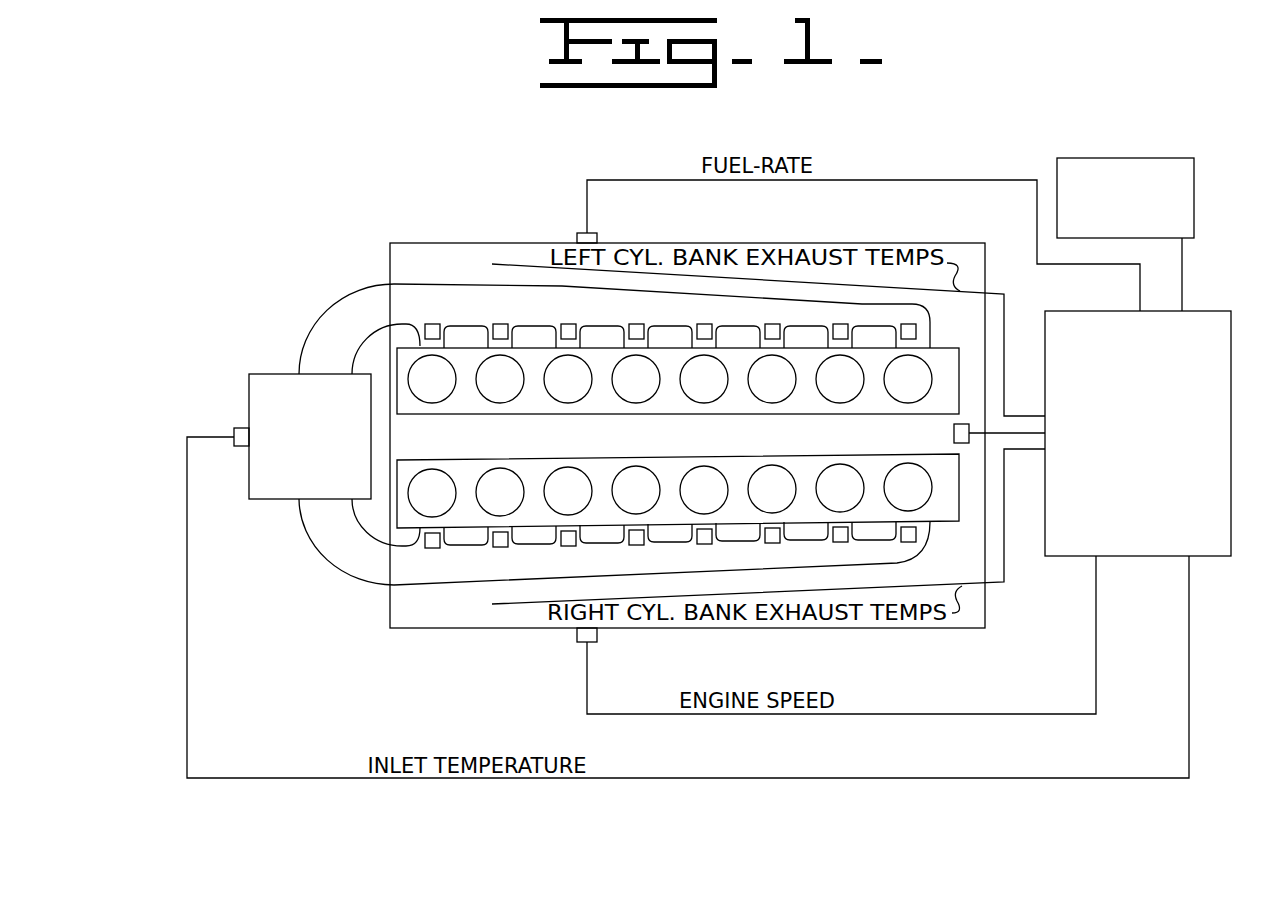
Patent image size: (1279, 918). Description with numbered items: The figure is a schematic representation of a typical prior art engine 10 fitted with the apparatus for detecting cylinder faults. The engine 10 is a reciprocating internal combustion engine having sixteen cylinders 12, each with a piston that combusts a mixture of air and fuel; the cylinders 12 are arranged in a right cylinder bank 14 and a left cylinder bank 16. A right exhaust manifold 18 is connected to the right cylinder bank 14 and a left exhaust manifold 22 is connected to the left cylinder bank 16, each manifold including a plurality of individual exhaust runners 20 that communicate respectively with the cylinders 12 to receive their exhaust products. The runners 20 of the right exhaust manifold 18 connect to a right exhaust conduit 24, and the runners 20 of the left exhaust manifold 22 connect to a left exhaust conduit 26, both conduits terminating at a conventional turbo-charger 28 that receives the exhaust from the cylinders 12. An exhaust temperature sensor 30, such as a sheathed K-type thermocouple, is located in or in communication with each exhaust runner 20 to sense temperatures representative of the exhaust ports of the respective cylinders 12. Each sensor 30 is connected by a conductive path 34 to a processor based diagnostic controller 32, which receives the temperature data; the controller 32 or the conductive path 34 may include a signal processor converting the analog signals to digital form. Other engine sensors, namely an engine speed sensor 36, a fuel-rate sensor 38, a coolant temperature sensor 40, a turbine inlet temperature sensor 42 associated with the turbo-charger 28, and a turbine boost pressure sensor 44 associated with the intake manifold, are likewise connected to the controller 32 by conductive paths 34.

The engine 10 is at (1220, 760).
The cylinders 12 is at (915, 389).
The right cylinder bank 14 is at (957, 488).
The left cylinder bank 16 is at (957, 380).
The right exhaust manifold 18 is at (945, 540).
The exhaust runners 20 is at (420, 333).
The left exhaust manifold 22 is at (432, 305).
The right exhaust conduit 24 is at (340, 582).
The left exhaust conduit 26 is at (328, 314).
The turbo-charger 28 is at (298, 362).
The exhaust temperature sensors 30 is at (431, 323).
The diagnostic controller 32 is at (1214, 570).
The conductive path 34 is at (918, 179).
The engine speed sensor 36 is at (575, 640).
The fuel-rate sensor 38 is at (575, 232).
The coolant temperature sensor 40 is at (1095, 157).
The turbine inlet temperature sensor 42 is at (232, 434).
The turbine boost pressure sensor 44 is at (952, 432).